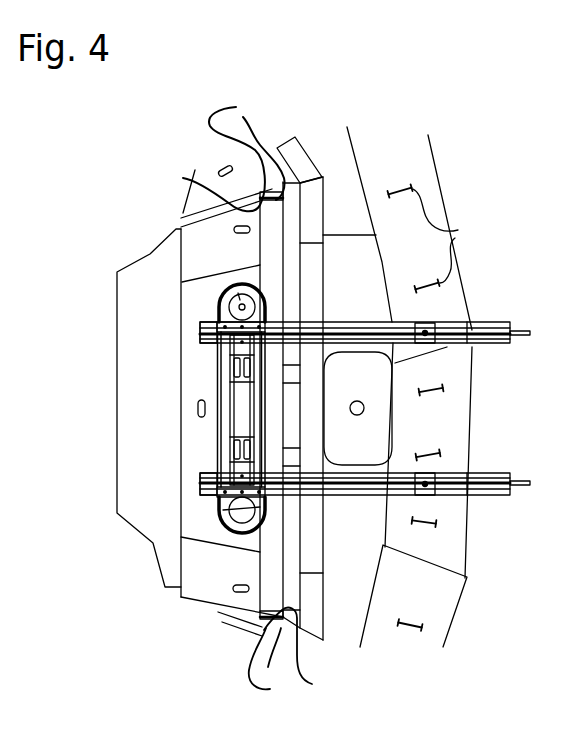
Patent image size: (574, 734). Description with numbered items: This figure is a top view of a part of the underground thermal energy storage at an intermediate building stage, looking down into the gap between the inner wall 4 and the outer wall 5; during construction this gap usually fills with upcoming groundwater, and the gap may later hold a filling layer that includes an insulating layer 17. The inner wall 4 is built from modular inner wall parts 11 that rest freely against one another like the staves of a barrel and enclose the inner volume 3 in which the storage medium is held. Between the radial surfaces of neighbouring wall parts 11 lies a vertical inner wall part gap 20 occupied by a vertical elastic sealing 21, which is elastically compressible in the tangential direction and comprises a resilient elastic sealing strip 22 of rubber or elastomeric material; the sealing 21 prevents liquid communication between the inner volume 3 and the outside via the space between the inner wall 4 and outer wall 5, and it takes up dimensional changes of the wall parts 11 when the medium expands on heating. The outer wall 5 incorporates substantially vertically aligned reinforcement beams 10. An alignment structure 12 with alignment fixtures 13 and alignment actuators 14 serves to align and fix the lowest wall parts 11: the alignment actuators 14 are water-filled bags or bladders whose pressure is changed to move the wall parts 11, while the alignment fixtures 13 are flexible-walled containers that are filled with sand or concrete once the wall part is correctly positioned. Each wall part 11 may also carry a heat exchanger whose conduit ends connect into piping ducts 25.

The inner volume 3 is at (90, 409).
The inner wall 4 is at (267, 602).
The outer wall 5 is at (413, 160).
The reinforcement beams 10 is at (452, 232).
The modular inner wall part 11 is at (193, 528).
The alignment structure 12 is at (487, 343).
The alignment fixture 13 is at (350, 558).
The alignment actuator 14 is at (371, 437).
The insulating layer 17 is at (316, 159).
The vertical inner wall part gap 20 is at (178, 221).
The vertical elastic sealing 21 is at (237, 399).
The resilient elastic sealing strip 22 is at (195, 170).
The piping duct 25 is at (240, 306).